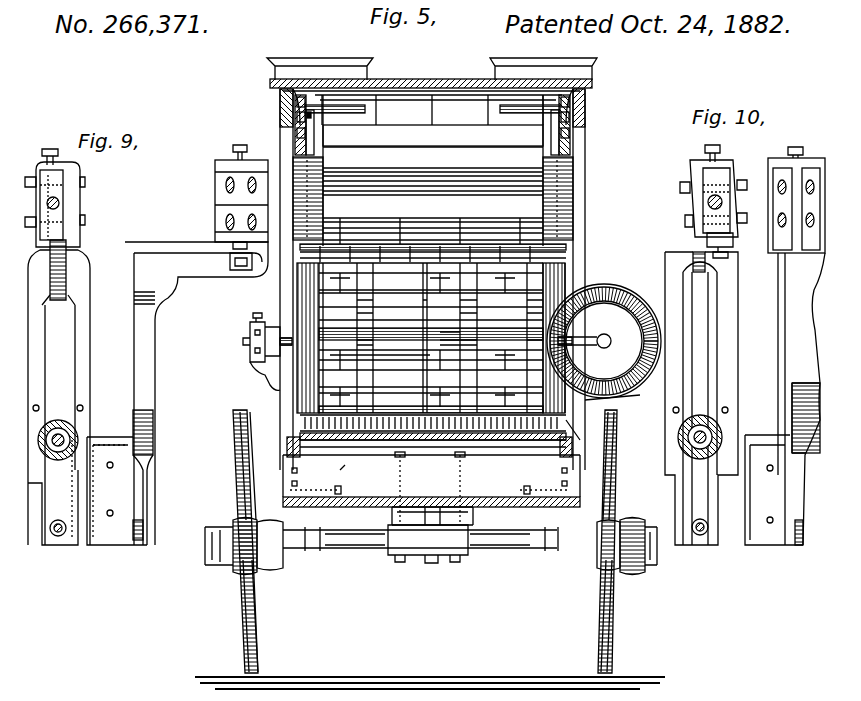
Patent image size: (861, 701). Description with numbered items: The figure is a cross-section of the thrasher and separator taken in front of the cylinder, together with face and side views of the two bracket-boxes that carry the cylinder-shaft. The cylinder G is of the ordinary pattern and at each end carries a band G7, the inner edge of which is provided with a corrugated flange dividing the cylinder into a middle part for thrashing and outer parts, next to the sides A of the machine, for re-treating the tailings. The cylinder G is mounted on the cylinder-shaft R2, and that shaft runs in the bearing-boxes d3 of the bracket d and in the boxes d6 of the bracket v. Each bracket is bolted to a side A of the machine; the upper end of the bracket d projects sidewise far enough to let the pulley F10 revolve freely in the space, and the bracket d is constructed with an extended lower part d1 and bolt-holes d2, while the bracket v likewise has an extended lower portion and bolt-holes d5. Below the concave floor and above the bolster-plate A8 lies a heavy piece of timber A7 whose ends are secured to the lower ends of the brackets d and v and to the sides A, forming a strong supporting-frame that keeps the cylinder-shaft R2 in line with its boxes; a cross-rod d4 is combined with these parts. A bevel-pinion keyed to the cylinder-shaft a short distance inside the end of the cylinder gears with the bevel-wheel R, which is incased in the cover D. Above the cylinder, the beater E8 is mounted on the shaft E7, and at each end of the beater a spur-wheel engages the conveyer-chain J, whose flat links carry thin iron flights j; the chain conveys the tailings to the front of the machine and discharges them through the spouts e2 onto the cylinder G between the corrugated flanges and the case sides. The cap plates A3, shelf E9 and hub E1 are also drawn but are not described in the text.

In FIG. 5, the side of the machine A is at (545, 58).
In FIG. 5, the top cap plate A3 is at (303, 58).
In FIG. 5, the heavy piece of timber A7 is at (431, 488).
In FIG. 5, the bolster-plate A8 is at (475, 515).
In FIG. 5, the upper shelf E9 is at (433, 107).
In FIG. 5, the beater E8 is at (433, 135).
In FIG. 5, the beater shaft E7 is at (433, 171).
In FIG. 5, the gear shaft E1 is at (572, 338).
In FIG. 5, the spout e2 is at (323, 203).
In FIG. 5, the conveyer-chain J is at (295, 120).
In FIG. 5, the flight j is at (306, 144).
In FIG. 5, the cylinder G is at (431, 338).
In FIG. 5, the band G7 is at (566, 285).
In FIG. 5, the bevel-wheel R is at (604, 341).
In FIG. 5, the cylinder-shaft R2 is at (443, 350).
In FIG. 9, the cylinder-shaft R2 is at (82, 185).
In FIG. 10, the cylinder-shaft R2 is at (740, 205).
In FIG. 5, the cover D is at (632, 388).
In FIG. 5, the pulley F10 is at (268, 325).
In FIG. 9, the bracket d is at (82, 368).
In FIG. 9, the extended lower part d1 is at (50, 500).
In FIG. 9, the bolt-holes d2 is at (80, 425).
In FIG. 9, the bearing-boxes d3 is at (60, 208).
In FIG. 5, the cross-rod d4 is at (351, 471).
In FIG. 5, the bolt-holes d5 is at (252, 368).
In FIG. 10, the bolt-holes d5 is at (722, 428).
In FIG. 10, the boxes d6 is at (688, 205).
In FIG. 10, the bracket v is at (701, 398).